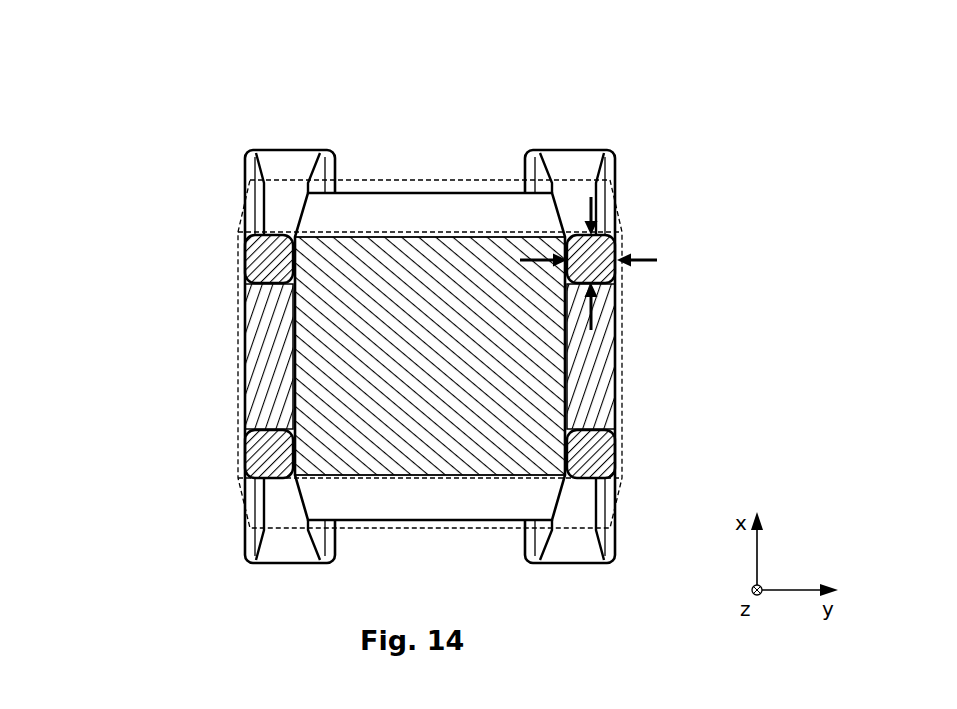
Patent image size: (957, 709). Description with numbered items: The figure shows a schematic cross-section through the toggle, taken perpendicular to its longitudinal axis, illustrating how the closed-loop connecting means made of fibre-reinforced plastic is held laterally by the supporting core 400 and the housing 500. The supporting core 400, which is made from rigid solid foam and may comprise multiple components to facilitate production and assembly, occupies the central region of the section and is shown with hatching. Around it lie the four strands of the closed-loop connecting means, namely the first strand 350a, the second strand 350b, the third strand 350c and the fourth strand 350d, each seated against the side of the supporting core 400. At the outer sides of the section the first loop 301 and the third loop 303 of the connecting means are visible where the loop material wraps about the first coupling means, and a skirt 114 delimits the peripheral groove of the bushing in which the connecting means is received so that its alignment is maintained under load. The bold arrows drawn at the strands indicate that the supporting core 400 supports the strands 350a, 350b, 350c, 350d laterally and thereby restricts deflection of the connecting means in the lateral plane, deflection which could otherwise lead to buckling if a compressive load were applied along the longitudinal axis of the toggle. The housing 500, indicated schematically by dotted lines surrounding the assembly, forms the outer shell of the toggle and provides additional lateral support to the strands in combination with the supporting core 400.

The skirt 114 is at (612, 153).
The first loop 301 is at (571, 157).
The third loop 303 is at (288, 157).
The housing 500 is at (430, 172).
The supporting core 400 is at (578, 347).
The first strand 350a is at (603, 267).
The second strand 350b is at (600, 461).
The third strand 350c is at (262, 451).
The fourth strand 350d is at (262, 258).